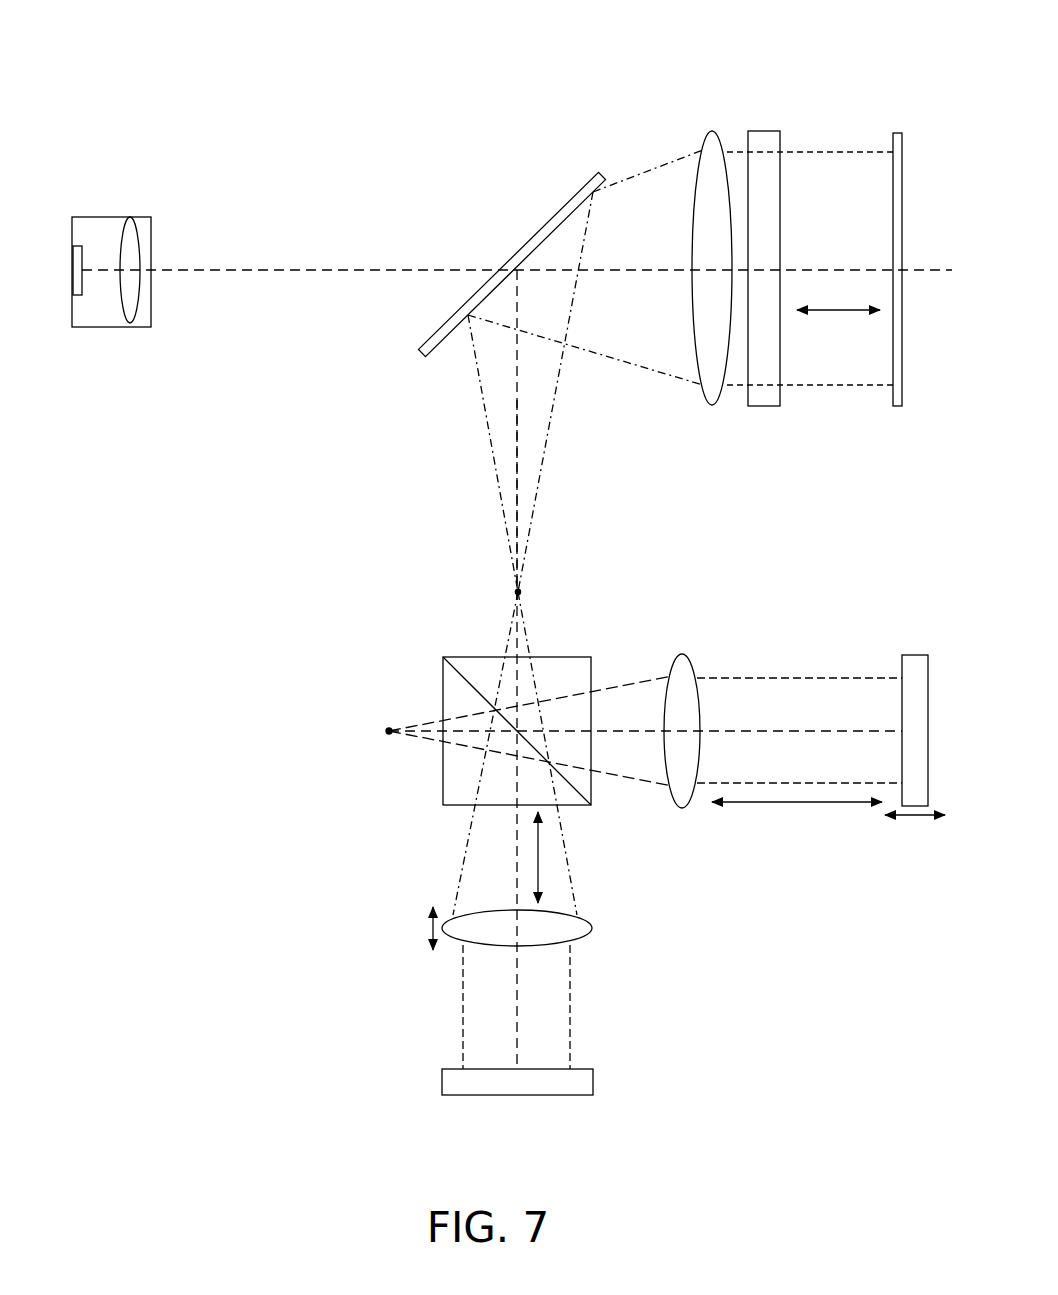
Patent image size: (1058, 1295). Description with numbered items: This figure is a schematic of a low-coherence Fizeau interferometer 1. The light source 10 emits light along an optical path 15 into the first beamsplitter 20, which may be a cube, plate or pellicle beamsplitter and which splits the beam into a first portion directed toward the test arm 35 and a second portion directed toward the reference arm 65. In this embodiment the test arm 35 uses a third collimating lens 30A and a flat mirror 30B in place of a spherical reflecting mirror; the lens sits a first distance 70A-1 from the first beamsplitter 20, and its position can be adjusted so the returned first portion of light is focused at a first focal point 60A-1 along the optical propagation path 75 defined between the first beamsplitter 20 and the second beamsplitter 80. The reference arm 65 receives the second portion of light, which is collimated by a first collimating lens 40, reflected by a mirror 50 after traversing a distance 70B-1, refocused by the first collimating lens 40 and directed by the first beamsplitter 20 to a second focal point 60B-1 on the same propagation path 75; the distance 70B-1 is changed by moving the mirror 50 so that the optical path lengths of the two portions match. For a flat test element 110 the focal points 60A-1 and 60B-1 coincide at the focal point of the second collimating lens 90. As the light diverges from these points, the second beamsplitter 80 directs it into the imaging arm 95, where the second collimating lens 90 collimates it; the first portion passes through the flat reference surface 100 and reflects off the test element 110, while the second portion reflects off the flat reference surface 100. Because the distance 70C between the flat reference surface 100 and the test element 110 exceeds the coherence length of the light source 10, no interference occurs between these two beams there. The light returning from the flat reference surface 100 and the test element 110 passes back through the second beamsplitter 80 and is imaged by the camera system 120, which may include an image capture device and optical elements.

The interferometer 1 is at (517, 538).
The camera system 120 is at (96, 217).
The second beamsplitter 80 is at (548, 220).
The optical propagation path 75 is at (517, 418).
The imaging arm 95 is at (920, 65).
The second collimating lens 90 is at (712, 130).
The flat reference surface 100 is at (760, 131).
The test element 110 is at (897, 133).
The distance 70C is at (838, 312).
The first focal point 60A-1 is at (434, 617).
The second focal point 60B-1 is at (435, 630).
The first beamsplitter 20 is at (462, 735).
The optical path 15 is at (612, 727).
The light source 10 is at (388, 731).
The reference arm 65 is at (667, 840).
The first collimating lens 40 is at (682, 655).
The mirror 50 is at (912, 655).
The distance 70B-1 is at (760, 803).
The first distance 70A-1 is at (540, 860).
The test arm 35 is at (431, 805).
The third collimating lens 30A is at (592, 928).
The flat mirror 30B is at (593, 1083).